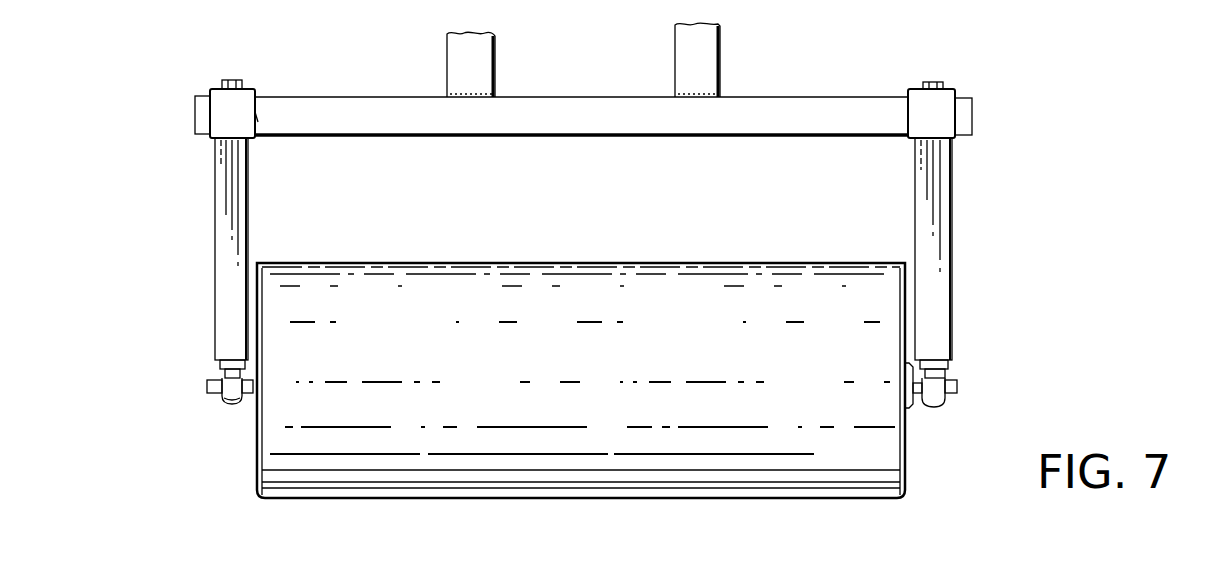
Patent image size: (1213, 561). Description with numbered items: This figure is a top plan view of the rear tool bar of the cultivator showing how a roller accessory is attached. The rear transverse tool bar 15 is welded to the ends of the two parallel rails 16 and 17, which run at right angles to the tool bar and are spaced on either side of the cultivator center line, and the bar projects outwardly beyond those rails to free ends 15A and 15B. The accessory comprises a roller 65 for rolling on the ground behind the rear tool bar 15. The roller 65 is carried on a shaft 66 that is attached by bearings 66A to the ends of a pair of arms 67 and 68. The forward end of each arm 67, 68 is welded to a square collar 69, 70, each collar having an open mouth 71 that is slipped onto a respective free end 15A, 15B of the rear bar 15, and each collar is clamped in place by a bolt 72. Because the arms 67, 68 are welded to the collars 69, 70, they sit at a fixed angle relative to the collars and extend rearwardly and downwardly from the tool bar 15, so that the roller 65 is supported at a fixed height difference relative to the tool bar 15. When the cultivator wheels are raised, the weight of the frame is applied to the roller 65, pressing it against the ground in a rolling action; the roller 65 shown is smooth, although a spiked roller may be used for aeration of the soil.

The rear transverse tool bar 15 is at (562, 138).
The free end of rear bar 15A is at (196, 115).
The free end of rear bar 15B is at (973, 118).
The rail 16 is at (464, 57).
The rail 17 is at (708, 72).
The roller 65 is at (548, 261).
The shaft 66 is at (207, 384).
The bearings 66A is at (236, 403).
The arm 67 is at (215, 198).
The arm 68 is at (954, 213).
The square collar 69 is at (224, 105).
The square collar 70 is at (936, 105).
The open mouth 71 is at (259, 117).
The bolt 72 is at (232, 79).